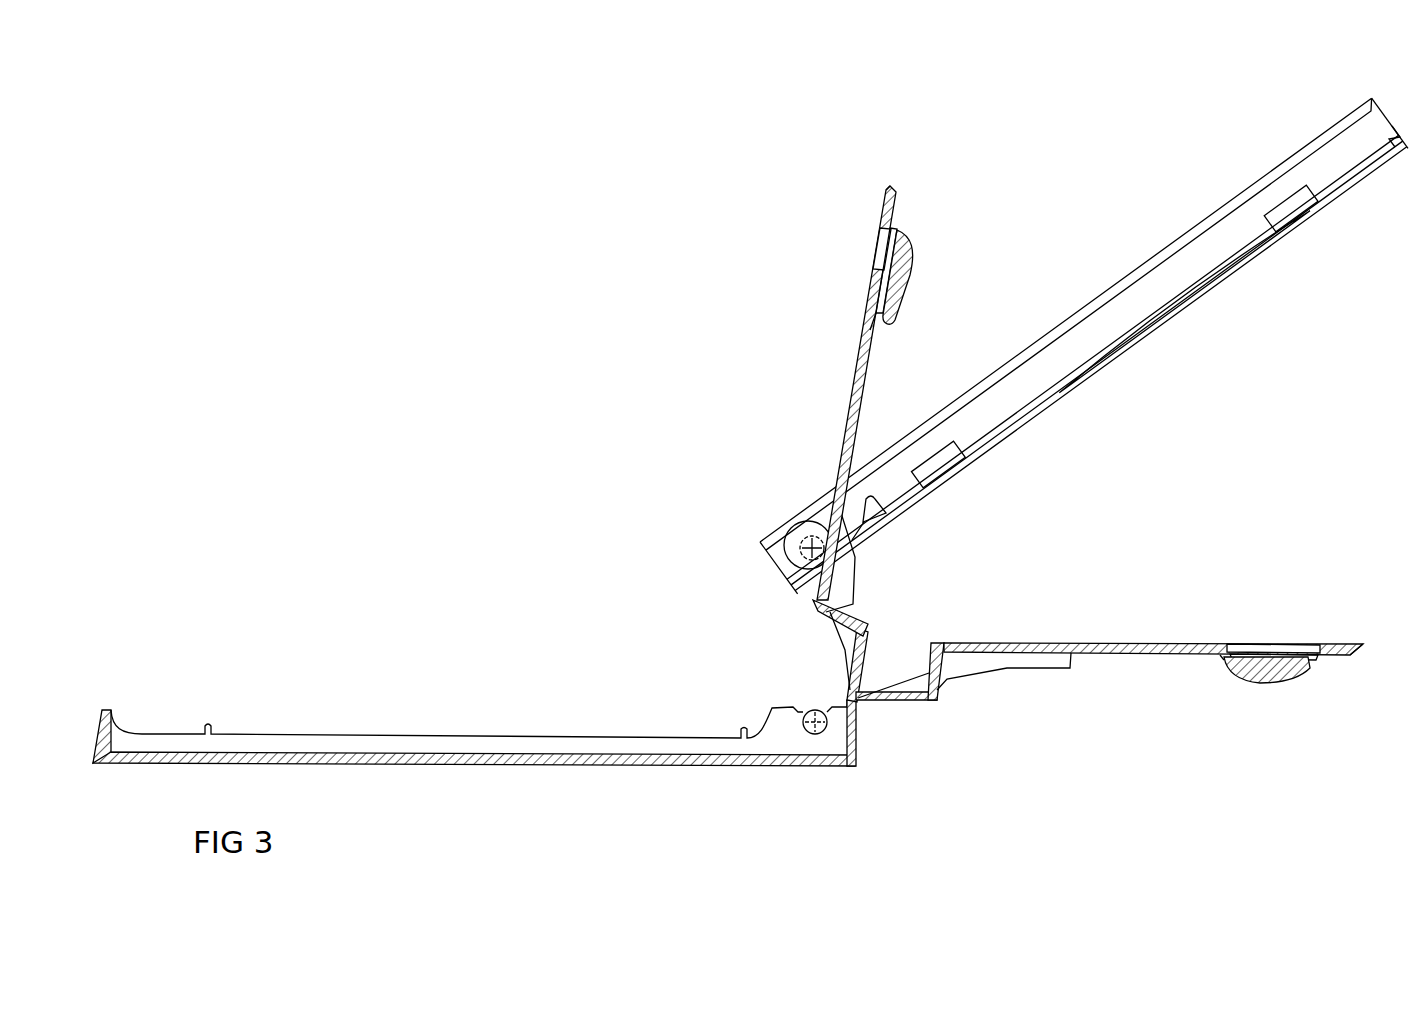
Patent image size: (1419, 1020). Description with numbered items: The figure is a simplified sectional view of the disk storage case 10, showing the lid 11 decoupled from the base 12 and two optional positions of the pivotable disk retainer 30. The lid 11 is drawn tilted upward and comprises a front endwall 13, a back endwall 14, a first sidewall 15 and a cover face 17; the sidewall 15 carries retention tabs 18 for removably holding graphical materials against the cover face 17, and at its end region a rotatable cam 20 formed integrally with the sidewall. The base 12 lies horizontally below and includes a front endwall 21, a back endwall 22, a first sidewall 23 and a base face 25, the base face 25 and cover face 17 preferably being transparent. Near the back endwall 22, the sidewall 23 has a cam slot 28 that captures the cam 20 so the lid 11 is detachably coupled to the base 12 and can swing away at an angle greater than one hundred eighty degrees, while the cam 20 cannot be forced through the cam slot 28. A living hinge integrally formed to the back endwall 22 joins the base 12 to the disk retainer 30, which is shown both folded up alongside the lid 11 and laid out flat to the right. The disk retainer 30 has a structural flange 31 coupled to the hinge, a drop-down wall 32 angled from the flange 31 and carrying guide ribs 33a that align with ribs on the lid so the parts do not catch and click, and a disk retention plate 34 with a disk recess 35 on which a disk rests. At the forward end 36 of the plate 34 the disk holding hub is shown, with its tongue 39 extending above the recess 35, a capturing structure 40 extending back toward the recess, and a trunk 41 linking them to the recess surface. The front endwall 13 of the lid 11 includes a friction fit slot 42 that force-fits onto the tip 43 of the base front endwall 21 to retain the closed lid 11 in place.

The disk storage case 10 is at (486, 147).
The lid 11 is at (1071, 335).
The base 12 is at (490, 734).
The front endwall 13 is at (1386, 118).
The back endwall 14 is at (883, 503).
The first sidewall 15 is at (1120, 307).
The cover face 17 is at (1194, 307).
The retention tabs 18 is at (937, 458).
The rotatable cam 20 is at (795, 558).
The front endwall 21 is at (100, 730).
The back endwall 22 is at (858, 742).
The first sidewall 23 is at (626, 738).
The base face 25 is at (530, 768).
The cam slot 28 is at (819, 735).
The disk retainer 30 is at (774, 348).
The structural flange 31 is at (865, 633).
The drop-down wall 32 is at (824, 615).
The guide ribs 33a is at (902, 683).
The disk retention plate 34 is at (857, 568).
The disk recess 35 is at (842, 447).
The forward end 36 is at (888, 187).
The tongue 39 is at (910, 245).
The capturing structure 40 is at (893, 253).
The trunk 41 is at (877, 333).
The friction fit slot 42 is at (1399, 152).
The tip 43 is at (104, 710).